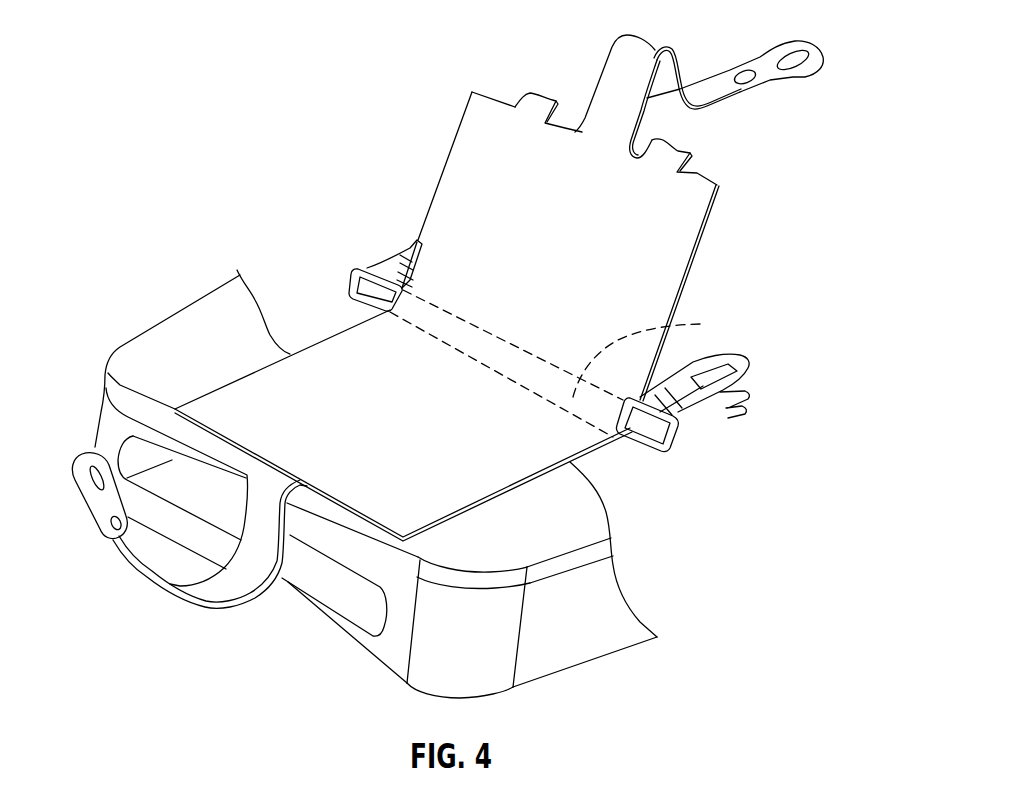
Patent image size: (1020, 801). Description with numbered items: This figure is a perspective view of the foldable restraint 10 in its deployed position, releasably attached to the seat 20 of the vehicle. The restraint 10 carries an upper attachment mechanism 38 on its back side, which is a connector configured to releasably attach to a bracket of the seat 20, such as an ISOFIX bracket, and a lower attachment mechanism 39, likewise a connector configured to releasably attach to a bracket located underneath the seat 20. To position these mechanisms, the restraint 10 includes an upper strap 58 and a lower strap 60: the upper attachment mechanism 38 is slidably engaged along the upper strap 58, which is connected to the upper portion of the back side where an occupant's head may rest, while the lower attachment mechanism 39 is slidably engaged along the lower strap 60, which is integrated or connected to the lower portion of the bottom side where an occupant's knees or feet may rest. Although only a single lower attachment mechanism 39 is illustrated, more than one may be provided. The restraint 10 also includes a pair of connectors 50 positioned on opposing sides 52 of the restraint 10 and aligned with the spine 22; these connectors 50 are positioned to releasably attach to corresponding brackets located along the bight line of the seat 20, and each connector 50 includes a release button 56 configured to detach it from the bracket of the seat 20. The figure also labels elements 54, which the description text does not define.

The foldable restraint 10 is at (760, 213).
The seat 20 is at (196, 345).
The spine 22 is at (653, 356).
The upper attachment mechanism 38 is at (810, 34).
The lower attachment mechanism 39 is at (86, 452).
The connectors 50 is at (367, 288).
The opposing sides 52 is at (438, 189).
The tab 54 is at (533, 103).
The release buttons 56 is at (352, 280).
The upper strap 58 is at (610, 89).
The lower strap 60 is at (258, 571).